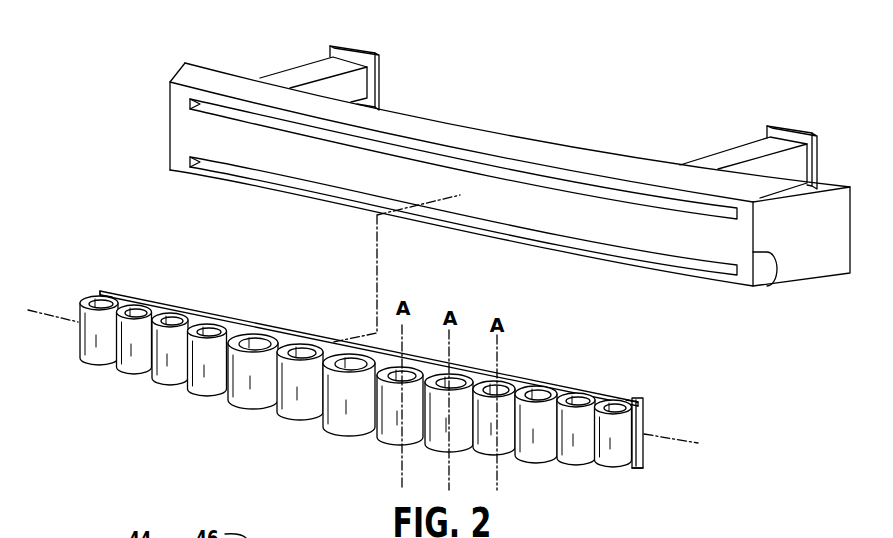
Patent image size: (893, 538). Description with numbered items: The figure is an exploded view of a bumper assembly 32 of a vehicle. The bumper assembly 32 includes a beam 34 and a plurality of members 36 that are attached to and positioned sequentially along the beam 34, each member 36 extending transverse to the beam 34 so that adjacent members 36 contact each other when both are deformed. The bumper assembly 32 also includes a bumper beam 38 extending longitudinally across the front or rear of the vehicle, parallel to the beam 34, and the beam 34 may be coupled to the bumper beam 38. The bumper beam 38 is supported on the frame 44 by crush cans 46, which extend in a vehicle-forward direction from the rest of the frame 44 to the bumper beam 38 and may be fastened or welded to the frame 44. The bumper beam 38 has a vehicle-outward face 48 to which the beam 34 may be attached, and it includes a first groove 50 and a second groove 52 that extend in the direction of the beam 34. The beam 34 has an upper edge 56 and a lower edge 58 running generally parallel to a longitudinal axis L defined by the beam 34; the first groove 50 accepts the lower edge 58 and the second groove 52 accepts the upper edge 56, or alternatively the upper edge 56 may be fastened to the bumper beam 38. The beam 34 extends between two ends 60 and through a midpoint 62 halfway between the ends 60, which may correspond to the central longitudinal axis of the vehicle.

The bumper assembly 32 is at (510, 186).
The beam 34 is at (583, 388).
The members 36 is at (130, 373).
The bumper beam 38 is at (517, 135).
The frame 44 is at (263, 75).
The crush cans 46 is at (310, 62).
The vehicle-outward face 48 is at (778, 262).
The first groove 50 is at (433, 150).
The second groove 52 is at (236, 180).
The upper edge 56 is at (635, 402).
The lower edge 58 is at (640, 469).
The ends 60 is at (97, 293).
The midpoint 62 is at (332, 342).
The longitudinal axis L is at (681, 442).